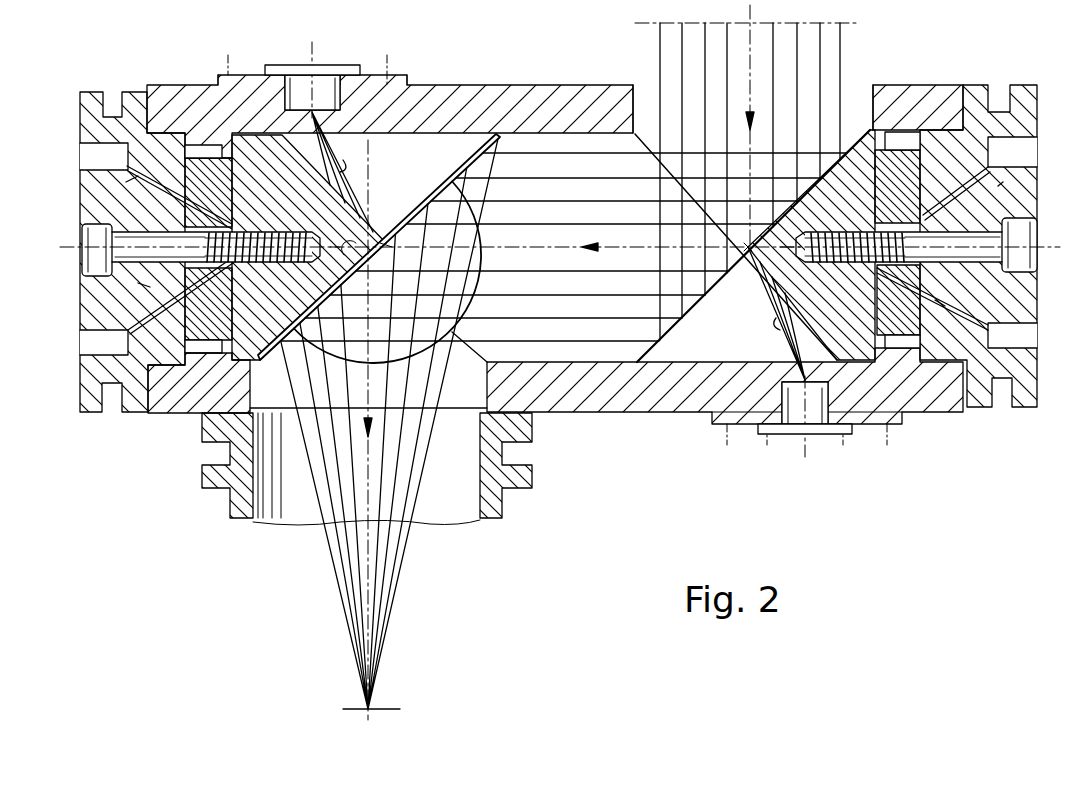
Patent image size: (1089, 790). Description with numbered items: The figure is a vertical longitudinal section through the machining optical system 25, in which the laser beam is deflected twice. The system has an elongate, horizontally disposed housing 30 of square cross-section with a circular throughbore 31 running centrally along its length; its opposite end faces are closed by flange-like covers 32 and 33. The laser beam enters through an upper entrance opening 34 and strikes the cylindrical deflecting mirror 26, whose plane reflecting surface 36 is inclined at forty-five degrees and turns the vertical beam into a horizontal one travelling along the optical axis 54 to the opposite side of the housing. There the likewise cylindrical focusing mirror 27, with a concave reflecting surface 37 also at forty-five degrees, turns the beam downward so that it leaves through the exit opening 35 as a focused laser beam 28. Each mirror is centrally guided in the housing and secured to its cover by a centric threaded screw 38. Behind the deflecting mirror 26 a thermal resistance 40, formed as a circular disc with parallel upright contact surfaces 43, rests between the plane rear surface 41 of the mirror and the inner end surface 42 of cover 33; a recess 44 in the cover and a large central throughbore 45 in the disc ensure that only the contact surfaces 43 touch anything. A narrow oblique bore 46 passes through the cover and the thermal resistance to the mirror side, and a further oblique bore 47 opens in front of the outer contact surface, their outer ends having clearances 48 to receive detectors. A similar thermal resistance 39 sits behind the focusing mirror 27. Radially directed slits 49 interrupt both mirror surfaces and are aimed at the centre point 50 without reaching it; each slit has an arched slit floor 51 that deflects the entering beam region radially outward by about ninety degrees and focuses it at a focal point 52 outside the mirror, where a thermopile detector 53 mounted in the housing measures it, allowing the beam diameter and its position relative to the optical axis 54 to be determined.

The machining optical system 25 is at (490, 87).
The deflecting mirror 26 is at (840, 175).
The focusing mirror 27 is at (253, 152).
The focused laser beam 28 is at (373, 610).
The housing 30 is at (460, 97).
The throughbore 31 is at (578, 360).
The cover 32 is at (95, 317).
The cover 33 is at (1030, 285).
The entrance opening 34 is at (858, 110).
The exit opening 35 is at (272, 425).
The plane reflecting surface 36 is at (777, 213).
The reflecting surface 37 is at (276, 416).
The threaded screw 38 is at (82, 258).
The thermal resistance 39 is at (190, 145).
The thermal resistance 40 is at (913, 160).
The rear surface 41 is at (210, 372).
The inner end surface 42 is at (192, 180).
The contact surfaces 43 is at (235, 191).
The recess 44 is at (198, 165).
The throughbore 45 is at (184, 219).
The bore 46 is at (132, 173).
The bore 47 is at (140, 283).
The clearances 48 is at (85, 153).
The slits 49 is at (344, 166).
The centre point 50 is at (345, 262).
The slit floor 51 is at (372, 207).
The focal points 52 is at (310, 105).
The detector 53 is at (326, 80).
The optical axis 54 is at (543, 255).